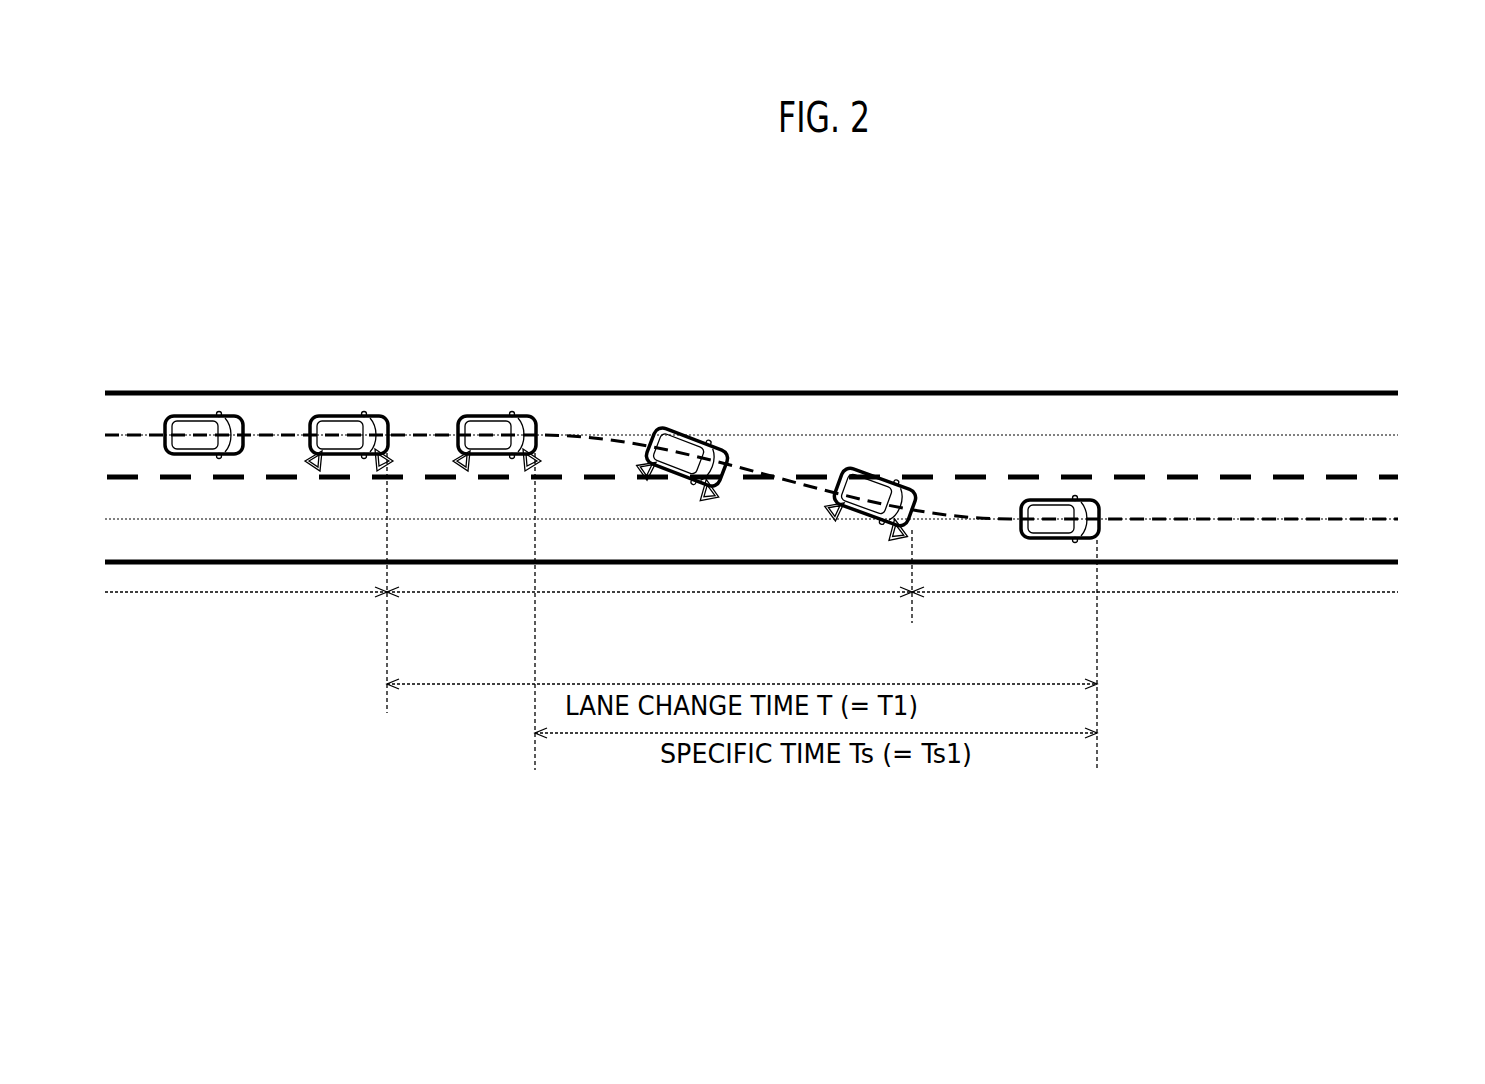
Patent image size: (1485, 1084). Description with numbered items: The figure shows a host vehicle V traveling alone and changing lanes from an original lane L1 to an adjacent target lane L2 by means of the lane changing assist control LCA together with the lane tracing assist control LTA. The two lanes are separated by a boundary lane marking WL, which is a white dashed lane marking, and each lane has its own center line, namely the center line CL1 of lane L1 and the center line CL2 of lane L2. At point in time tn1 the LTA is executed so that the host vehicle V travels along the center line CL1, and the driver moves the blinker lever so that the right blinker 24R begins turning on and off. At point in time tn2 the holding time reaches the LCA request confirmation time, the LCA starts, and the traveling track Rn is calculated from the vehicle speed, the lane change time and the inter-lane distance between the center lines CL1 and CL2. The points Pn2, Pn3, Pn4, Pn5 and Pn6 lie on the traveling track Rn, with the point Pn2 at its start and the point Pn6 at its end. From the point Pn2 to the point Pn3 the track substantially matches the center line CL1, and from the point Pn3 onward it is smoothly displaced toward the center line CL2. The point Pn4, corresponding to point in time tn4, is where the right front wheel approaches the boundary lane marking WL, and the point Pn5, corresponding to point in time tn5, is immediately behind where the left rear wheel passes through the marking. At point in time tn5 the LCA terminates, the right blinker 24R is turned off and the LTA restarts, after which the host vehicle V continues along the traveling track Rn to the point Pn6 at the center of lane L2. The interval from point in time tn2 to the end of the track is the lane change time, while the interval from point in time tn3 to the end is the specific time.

The host vehicle V is at (186, 417).
The right blinker 24R is at (384, 474).
The traveling track Rn is at (581, 434).
The lane L1 is at (1343, 412).
The center line of the lane L1 CL1 is at (1343, 433).
The boundary lane marking WL is at (1340, 475).
The center line of the lane L2 CL2 is at (1343, 518).
The lane L2 is at (1352, 540).
The point Pn2 is at (349, 443).
The point Pn3 is at (497, 399).
The point Pn4 is at (684, 417).
The point Pn5 is at (872, 437).
The point Pn6 is at (1060, 435).
The point in time tn1 is at (204, 407).
The point in time tn2 is at (349, 457).
The point in time tn3 is at (497, 413).
The point in time tn4 is at (684, 431).
The point in time tn5 is at (872, 451).
The lane tracing assist control LTA is at (751, 609).
The lane changing assist control LCA is at (649, 609).